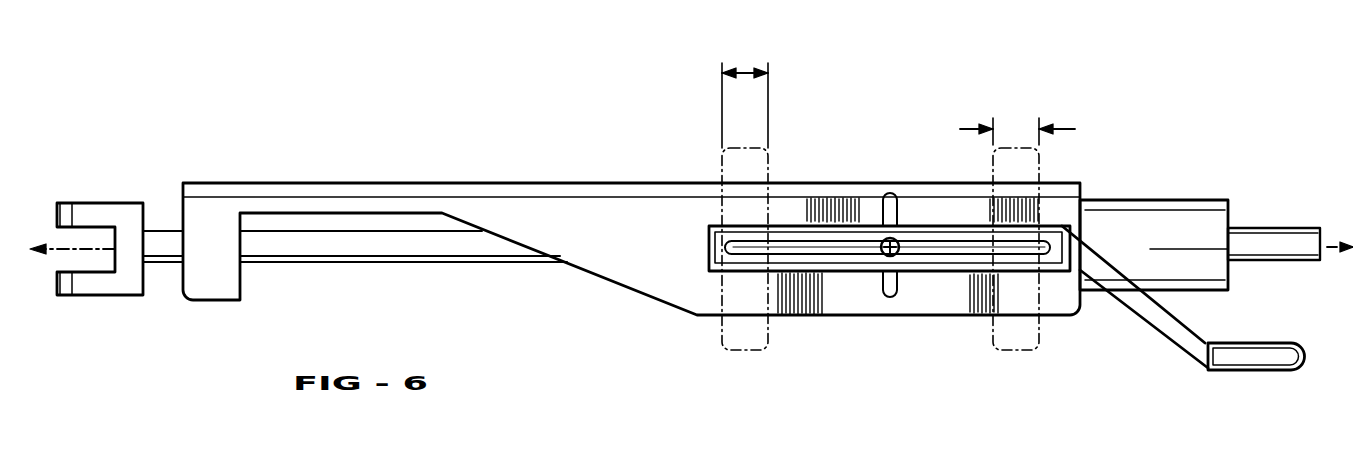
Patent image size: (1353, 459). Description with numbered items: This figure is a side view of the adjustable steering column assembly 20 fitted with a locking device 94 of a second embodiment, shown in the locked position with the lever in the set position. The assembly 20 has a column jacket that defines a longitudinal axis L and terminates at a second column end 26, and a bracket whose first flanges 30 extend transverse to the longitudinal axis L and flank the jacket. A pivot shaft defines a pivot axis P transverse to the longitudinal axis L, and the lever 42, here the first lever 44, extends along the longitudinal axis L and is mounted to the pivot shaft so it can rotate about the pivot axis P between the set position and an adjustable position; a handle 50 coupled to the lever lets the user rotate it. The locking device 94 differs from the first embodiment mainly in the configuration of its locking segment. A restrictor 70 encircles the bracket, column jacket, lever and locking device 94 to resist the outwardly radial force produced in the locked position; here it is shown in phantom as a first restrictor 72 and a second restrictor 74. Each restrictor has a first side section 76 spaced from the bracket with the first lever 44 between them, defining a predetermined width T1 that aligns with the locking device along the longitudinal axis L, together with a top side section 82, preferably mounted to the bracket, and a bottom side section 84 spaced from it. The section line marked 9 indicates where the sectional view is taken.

The adjustable steering column assembly 20 is at (608, 153).
The second column end 26 is at (358, 249).
The first flanges 30 is at (620, 268).
The lever 42 is at (848, 326).
The first lever 44 is at (1160, 322).
The handle 50 is at (1267, 355).
The restrictor 70 is at (1118, 87).
The first restrictor 72 is at (990, 290).
The second restrictor 74 is at (722, 293).
The first side section 76 is at (748, 166).
The top side section 82 is at (736, 147).
The bottom side section 84 is at (738, 350).
The locking device 94 is at (1083, 320).
The pivot axis P is at (885, 192).
The longitudinal axis L is at (1337, 240).
The predetermined width T1 is at (743, 73).
The section line 9- 9 is at (1014, 137).